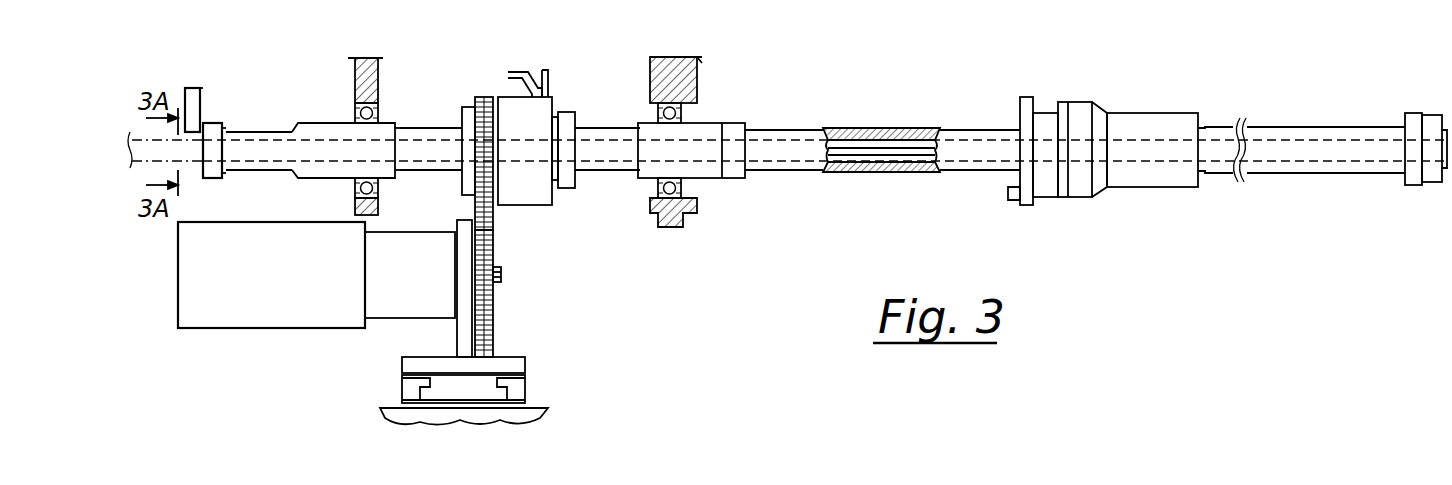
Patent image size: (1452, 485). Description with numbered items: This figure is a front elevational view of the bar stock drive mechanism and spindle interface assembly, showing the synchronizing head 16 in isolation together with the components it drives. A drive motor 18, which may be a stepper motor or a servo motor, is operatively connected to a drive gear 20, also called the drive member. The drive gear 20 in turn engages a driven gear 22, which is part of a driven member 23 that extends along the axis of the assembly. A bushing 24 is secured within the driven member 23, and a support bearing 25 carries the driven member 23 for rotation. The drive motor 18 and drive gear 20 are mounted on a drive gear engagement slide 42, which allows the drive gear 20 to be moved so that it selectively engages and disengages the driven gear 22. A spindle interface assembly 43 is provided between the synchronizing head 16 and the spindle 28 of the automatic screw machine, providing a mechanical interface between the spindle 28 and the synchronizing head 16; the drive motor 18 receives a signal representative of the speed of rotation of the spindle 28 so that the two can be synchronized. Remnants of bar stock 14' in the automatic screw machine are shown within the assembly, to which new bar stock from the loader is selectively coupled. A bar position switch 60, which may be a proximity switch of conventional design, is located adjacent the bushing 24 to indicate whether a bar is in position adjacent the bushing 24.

The bar position switch 60 is at (203, 106).
The support bearing 25 is at (355, 120).
The driven gear 22 is at (486, 96).
The driven member 23 is at (438, 118).
The synchronizing head 16 is at (563, 100).
The remnants of bar stock 14' is at (881, 107).
The spindle interface assembly 43 is at (972, 147).
The spindle 28 is at (1320, 132).
The bushing 24 is at (218, 178).
The drive motor 18 is at (247, 305).
The drive gear 20 is at (490, 318).
The drive gear engagement slide 42 is at (487, 392).